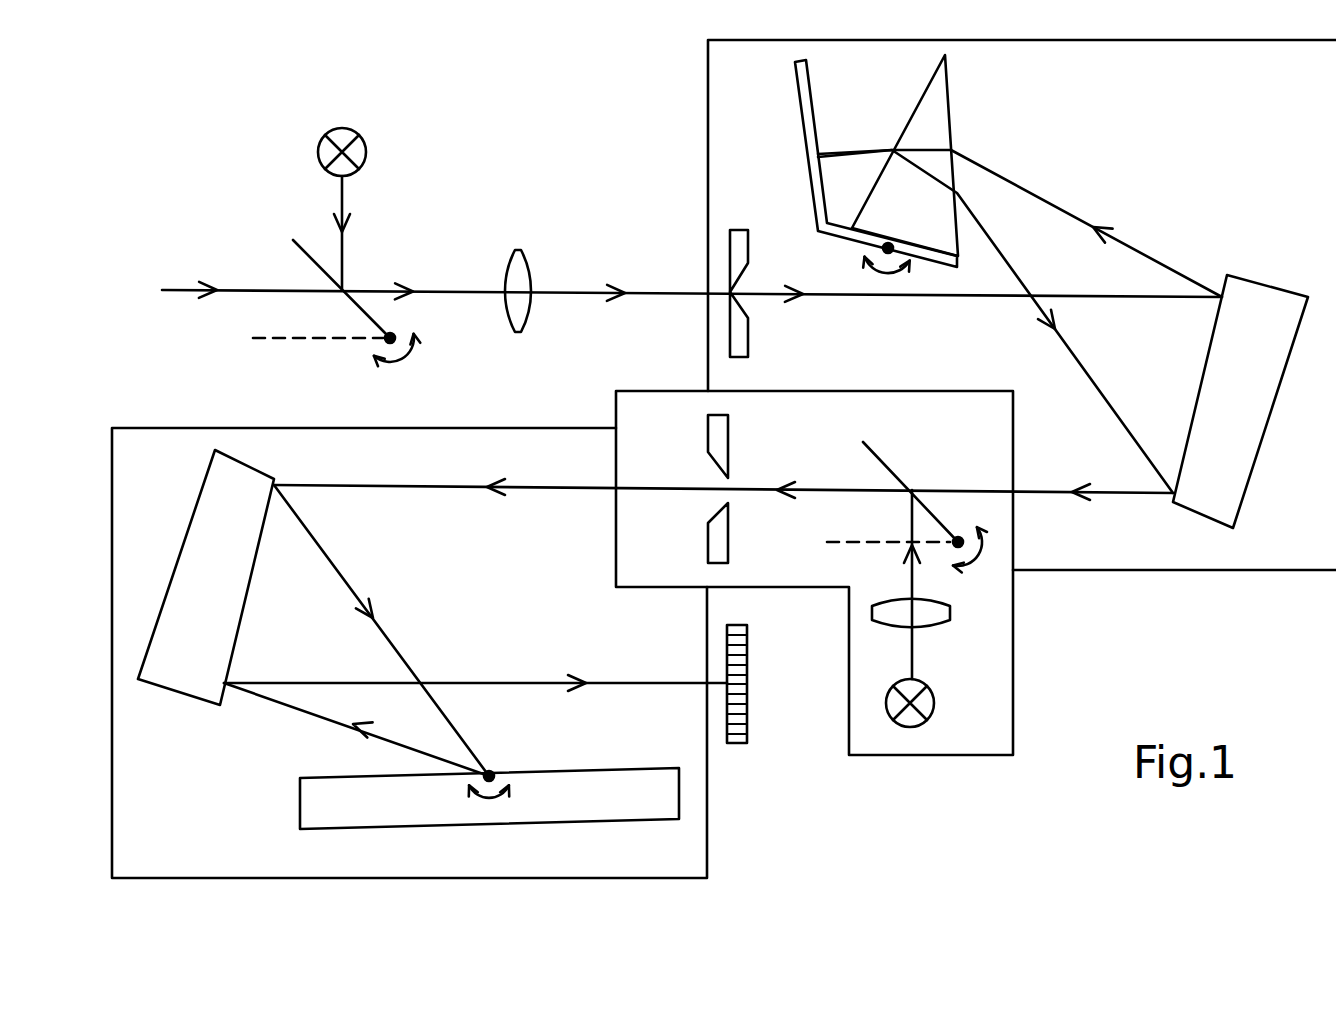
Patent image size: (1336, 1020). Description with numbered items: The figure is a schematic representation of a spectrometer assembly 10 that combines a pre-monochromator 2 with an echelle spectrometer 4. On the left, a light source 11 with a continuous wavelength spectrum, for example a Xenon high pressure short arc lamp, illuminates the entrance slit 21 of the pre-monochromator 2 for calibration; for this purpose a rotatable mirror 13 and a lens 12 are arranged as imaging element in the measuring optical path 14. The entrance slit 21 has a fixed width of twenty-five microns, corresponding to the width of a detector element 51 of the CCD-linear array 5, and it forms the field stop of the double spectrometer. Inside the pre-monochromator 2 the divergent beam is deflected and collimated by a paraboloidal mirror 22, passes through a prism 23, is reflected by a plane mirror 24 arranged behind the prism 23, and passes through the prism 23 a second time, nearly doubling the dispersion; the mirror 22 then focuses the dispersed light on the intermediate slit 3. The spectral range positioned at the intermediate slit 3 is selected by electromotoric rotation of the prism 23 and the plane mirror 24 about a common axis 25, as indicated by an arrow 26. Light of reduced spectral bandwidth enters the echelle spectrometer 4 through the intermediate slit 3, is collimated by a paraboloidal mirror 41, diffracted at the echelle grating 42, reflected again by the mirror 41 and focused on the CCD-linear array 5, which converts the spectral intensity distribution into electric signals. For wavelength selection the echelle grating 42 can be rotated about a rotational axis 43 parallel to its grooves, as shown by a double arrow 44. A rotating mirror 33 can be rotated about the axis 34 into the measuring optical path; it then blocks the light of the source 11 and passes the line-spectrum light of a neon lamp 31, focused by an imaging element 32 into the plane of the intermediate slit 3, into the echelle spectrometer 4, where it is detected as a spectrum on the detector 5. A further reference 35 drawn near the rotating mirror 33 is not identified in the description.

The spectrometer assembly 10 is at (632, 60).
The light source 11 is at (343, 140).
The lens 12 is at (518, 270).
The rotatable mirror 13 is at (310, 253).
The measuring optical path 14 is at (265, 288).
The pre-monochromator 2 is at (1022, 305).
The entrance slit 21 is at (745, 264).
The paraboloidal mirror 22 is at (1247, 353).
The prism 23 is at (923, 128).
The plane mirror 24 is at (805, 128).
The common axis 25 is at (890, 243).
The arrow 26 is at (887, 273).
The intermediate slit 3 is at (708, 450).
The light source 31 is at (926, 700).
The imaging element 32 is at (897, 610).
The rotating mirror 33 is at (893, 465).
The axis 34 is at (970, 562).
The pivot axis 35 is at (977, 527).
The echelle spectrometer 4 is at (409, 653).
The paraboloidal mirror 41 is at (189, 620).
The echelle grating 42 is at (371, 797).
The rotational axis 43 is at (493, 770).
The double arrow 44 is at (489, 798).
The CCD-linear array 5 is at (748, 684).
The detector element 51 is at (743, 732).